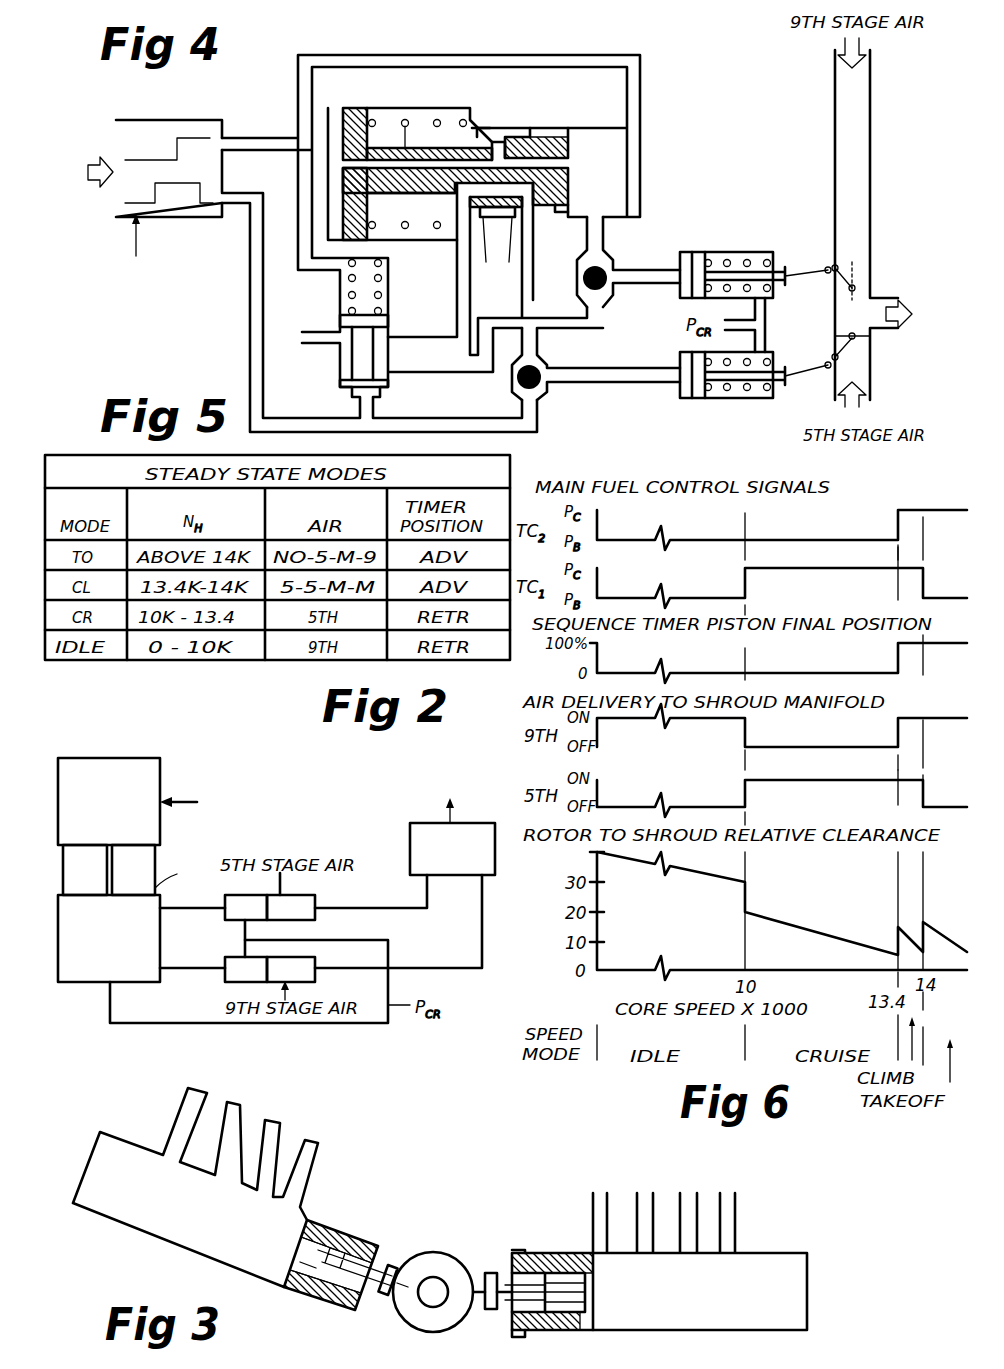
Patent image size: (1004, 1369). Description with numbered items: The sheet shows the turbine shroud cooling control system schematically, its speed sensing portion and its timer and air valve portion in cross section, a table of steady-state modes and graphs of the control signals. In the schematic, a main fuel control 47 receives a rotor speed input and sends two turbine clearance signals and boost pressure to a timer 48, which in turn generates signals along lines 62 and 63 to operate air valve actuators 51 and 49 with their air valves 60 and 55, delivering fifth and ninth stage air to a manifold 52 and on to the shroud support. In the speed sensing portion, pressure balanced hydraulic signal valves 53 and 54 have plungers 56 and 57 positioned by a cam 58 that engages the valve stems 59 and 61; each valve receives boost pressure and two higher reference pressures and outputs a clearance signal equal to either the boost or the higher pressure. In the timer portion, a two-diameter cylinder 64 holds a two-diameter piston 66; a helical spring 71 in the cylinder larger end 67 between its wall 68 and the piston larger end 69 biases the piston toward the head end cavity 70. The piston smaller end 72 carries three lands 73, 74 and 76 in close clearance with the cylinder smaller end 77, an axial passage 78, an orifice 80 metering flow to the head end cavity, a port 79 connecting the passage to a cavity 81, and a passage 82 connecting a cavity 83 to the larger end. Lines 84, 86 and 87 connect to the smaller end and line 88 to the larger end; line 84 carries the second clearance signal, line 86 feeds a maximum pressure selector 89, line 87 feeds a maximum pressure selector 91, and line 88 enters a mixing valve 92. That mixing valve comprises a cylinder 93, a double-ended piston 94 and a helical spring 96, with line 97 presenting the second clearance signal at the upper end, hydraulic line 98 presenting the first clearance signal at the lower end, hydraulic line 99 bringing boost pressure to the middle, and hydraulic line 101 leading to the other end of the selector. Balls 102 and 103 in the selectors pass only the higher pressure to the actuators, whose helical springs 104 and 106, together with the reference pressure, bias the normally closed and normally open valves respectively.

In FIG. 4, the main fuel control 47 is at (135, 118).
In FIG. 2, the main fuel control 47 is at (160, 834).
In FIG. 4, the timer 48 is at (643, 65).
In FIG. 2, the timer 48 is at (137, 985).
In FIG. 4, the air valve actuator 49 is at (718, 398).
In FIG. 2, the air valve actuator 49 is at (237, 895).
In FIG. 4, the air valve actuator 51 is at (727, 252).
In FIG. 2, the air valve actuator 51 is at (237, 957).
In FIG. 4, the manifold 52 is at (887, 330).
In FIG. 2, the manifold 52 is at (410, 828).
In FIG. 3, the manifold 52 is at (550, 1272).
In FIG. 3, the hydraulic signal valve 53 is at (778, 1253).
In FIG. 3, the hydraulic signal valve 54 is at (125, 1138).
In FIG. 4, the air valve 55 is at (858, 338).
In FIG. 2, the air valve 55 is at (310, 895).
In FIG. 3, the plunger 56 is at (572, 1272).
In FIG. 3, the plunger 57 is at (332, 1222).
In FIG. 3, the cam 58 is at (445, 1252).
In FIG. 3, the valve stem 59 is at (490, 1270).
In FIG. 4, the air valve 60 is at (856, 274).
In FIG. 2, the air valve 60 is at (315, 966).
In FIG. 3, the valve stem 61 is at (390, 1264).
In FIG. 4, the line 62 is at (676, 268).
In FIG. 2, the line 62 is at (195, 985).
In FIG. 4, the line 63 is at (646, 382).
In FIG. 2, the line 63 is at (190, 912).
In FIG. 4, the two-diameter cylinder 64 is at (578, 128).
In FIG. 4, the two-diameter piston 66 is at (443, 119).
In FIG. 4, the cylinder larger end 67 is at (383, 108).
In FIG. 4, the wall 68 is at (470, 120).
In FIG. 4, the piston larger end 69 is at (350, 108).
In FIG. 4, the head end cavity 70 is at (335, 135).
In FIG. 4, the helical spring 71 is at (405, 119).
In FIG. 4, the piston smaller end 72 is at (577, 137).
In FIG. 4, the land 73 is at (558, 212).
In FIG. 4, the land 74 is at (511, 236).
In FIG. 4, the land 76 is at (484, 236).
In FIG. 4, the cylinder smaller end 77 is at (590, 128).
In FIG. 4, the passage 78 is at (568, 162).
In FIG. 4, the port 79 is at (498, 135).
In FIG. 4, the orifice 80 is at (340, 165).
In FIG. 4, the cavity 81 is at (495, 212).
In FIG. 4, the passage 82 is at (470, 192).
In FIG. 4, the cavity 83 is at (545, 208).
In FIG. 4, the line 84 is at (623, 67).
In FIG. 4, the line 86 is at (603, 237).
In FIG. 4, the line 87 is at (522, 297).
In FIG. 4, the line 88 is at (457, 297).
In FIG. 4, the maximum pressure selector 89 is at (580, 297).
In FIG. 4, the maximum pressure selector 91 is at (537, 393).
In FIG. 4, the mixing valve 92 is at (348, 355).
In FIG. 4, the cylinder 93 is at (390, 303).
In FIG. 4, the double-ended piston 94 is at (348, 380).
In FIG. 4, the helical spring 96 is at (348, 295).
In FIG. 4, the line 97 is at (312, 258).
In FIG. 4, the hydraulic line 98 is at (250, 312).
In FIG. 4, the hydraulic line 99 is at (312, 338).
In FIG. 4, the hydraulic line 101 is at (414, 373).
In FIG. 4, the ball 102 is at (583, 275).
In FIG. 4, the ball 103 is at (512, 381).
In FIG. 4, the helical spring 104 is at (756, 398).
In FIG. 4, the helical spring 106 is at (756, 258).